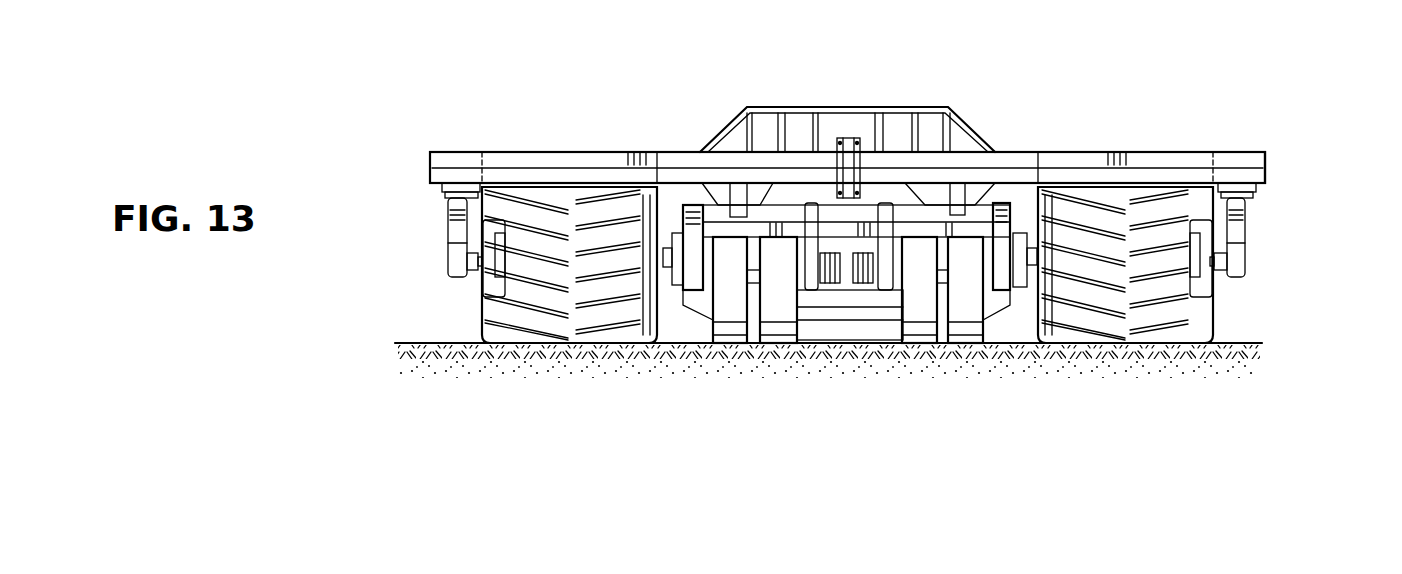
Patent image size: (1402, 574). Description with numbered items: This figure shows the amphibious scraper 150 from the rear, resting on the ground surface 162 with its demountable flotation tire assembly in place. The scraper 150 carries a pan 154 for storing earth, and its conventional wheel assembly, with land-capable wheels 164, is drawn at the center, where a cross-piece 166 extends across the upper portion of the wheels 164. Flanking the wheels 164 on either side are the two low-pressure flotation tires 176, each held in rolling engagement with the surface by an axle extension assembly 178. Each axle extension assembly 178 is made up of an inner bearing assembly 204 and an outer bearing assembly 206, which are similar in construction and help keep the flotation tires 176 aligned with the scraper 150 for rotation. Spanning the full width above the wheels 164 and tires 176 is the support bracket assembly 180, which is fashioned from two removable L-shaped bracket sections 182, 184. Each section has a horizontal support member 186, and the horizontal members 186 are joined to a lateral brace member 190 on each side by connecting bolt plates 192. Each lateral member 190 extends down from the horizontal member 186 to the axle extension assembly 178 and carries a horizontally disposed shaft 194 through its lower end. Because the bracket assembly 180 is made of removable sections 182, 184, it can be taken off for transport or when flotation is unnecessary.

The amphibious scraper 150 is at (948, 102).
The pan 154 is at (983, 135).
The ground surface 162 is at (851, 423).
The land-capable wheels 164 is at (723, 343).
The cross-piece 166 is at (908, 208).
The flotation tires 176 is at (480, 328).
The axle extension assembly 178 is at (845, 240).
The support bracket assembly 180 is at (1142, 145).
The L-shaped bracket section 182 is at (1203, 152).
The L-shaped bracket section 184 is at (455, 152).
The horizontal support member 186 is at (683, 150).
The lateral brace member 190 is at (448, 218).
The connecting bolt plates 192 is at (442, 190).
The horizontally disposed shaft 194 is at (465, 278).
The inner bearing assembly 204 is at (448, 242).
The outer bearing assembly 206 is at (672, 230).